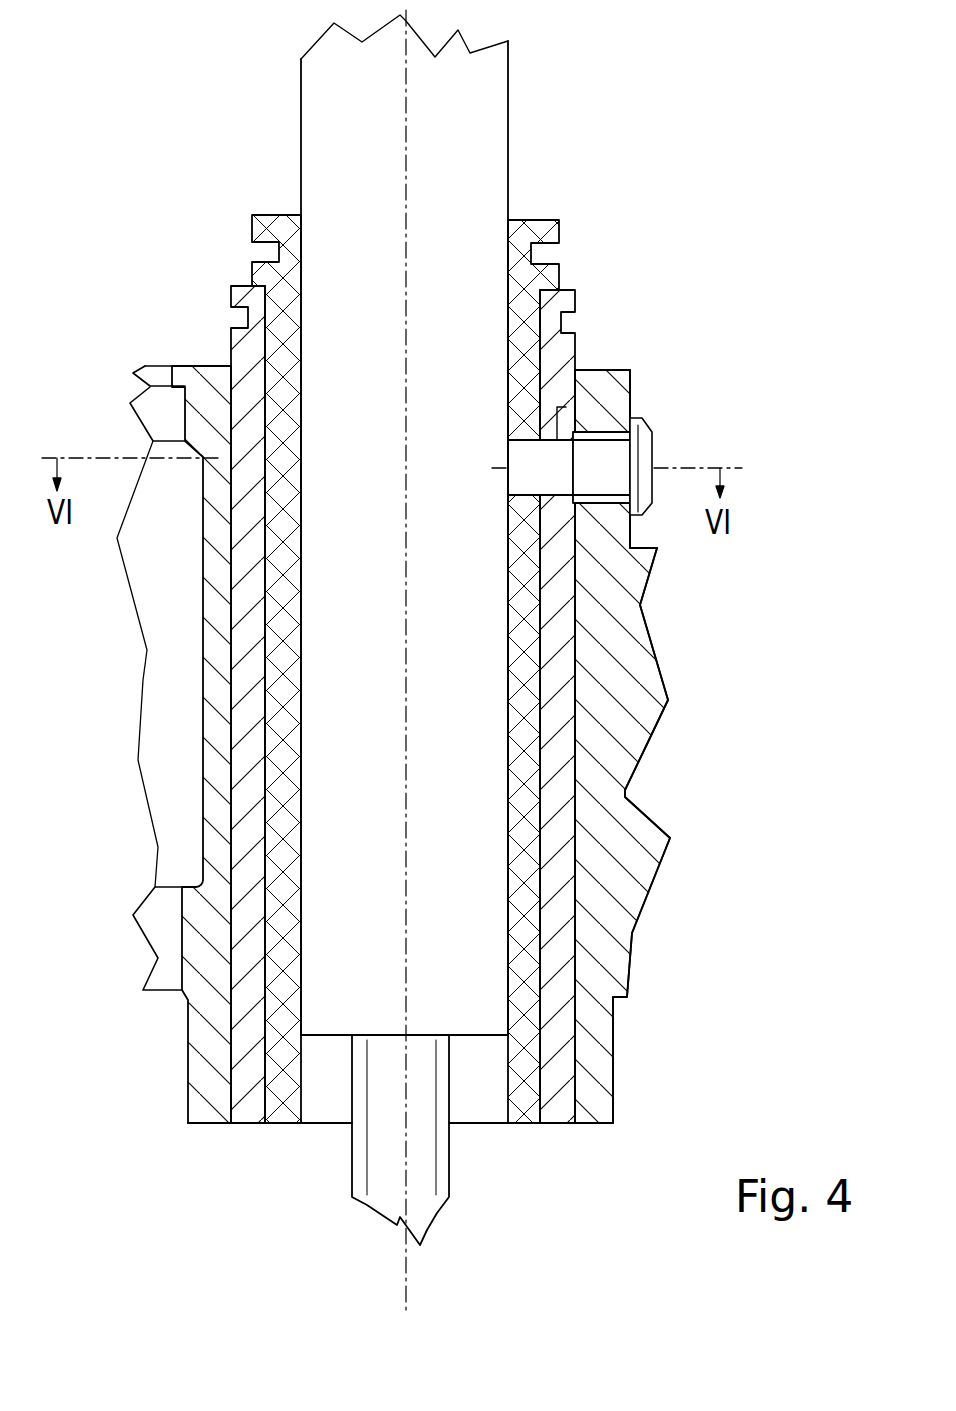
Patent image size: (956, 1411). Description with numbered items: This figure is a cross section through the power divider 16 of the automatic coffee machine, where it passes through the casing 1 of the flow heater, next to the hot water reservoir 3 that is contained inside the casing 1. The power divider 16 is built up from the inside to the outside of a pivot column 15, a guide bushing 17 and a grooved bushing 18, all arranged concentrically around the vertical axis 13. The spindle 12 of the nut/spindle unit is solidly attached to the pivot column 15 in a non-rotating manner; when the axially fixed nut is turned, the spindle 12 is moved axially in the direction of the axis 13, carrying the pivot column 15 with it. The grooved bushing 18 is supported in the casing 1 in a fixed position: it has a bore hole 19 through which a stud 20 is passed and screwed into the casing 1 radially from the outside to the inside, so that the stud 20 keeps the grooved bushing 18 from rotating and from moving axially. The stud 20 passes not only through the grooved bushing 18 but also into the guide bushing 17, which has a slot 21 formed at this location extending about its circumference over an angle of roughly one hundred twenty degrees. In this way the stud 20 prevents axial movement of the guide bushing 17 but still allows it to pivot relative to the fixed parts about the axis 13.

The casing 1 is at (610, 748).
The hot water reservoir 3 is at (172, 683).
The spindle 12 is at (413, 1188).
The vertical axis 13 is at (406, 122).
The pivot column 15 is at (465, 160).
The power divider 16 is at (496, 650).
The guide bushing 17 is at (512, 610).
The grooved bushing 18 is at (555, 675).
The bore hole 19 is at (558, 410).
The stud 20 is at (608, 457).
The slot 21 is at (521, 405).